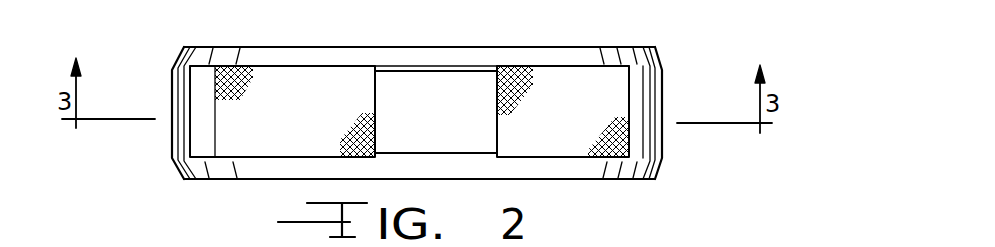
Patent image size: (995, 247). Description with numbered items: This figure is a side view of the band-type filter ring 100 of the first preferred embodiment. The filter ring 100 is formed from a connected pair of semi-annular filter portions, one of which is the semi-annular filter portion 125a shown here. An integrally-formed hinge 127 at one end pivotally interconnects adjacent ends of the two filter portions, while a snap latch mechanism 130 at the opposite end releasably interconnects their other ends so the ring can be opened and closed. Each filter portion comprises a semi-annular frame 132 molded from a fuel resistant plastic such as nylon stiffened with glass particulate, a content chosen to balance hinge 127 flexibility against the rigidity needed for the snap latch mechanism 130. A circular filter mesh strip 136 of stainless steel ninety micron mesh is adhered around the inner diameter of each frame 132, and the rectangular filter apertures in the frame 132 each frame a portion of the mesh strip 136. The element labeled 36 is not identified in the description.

The filter ring 100 is at (159, 35).
The semi-annular filter portion 125a is at (512, 36).
The hinge 127 is at (677, 100).
The snap latch mechanism 130 is at (158, 133).
The semi-annular frame 132 is at (450, 118).
The filter mesh strip 136 is at (277, 117).
The second filter element 36 is at (565, 123).